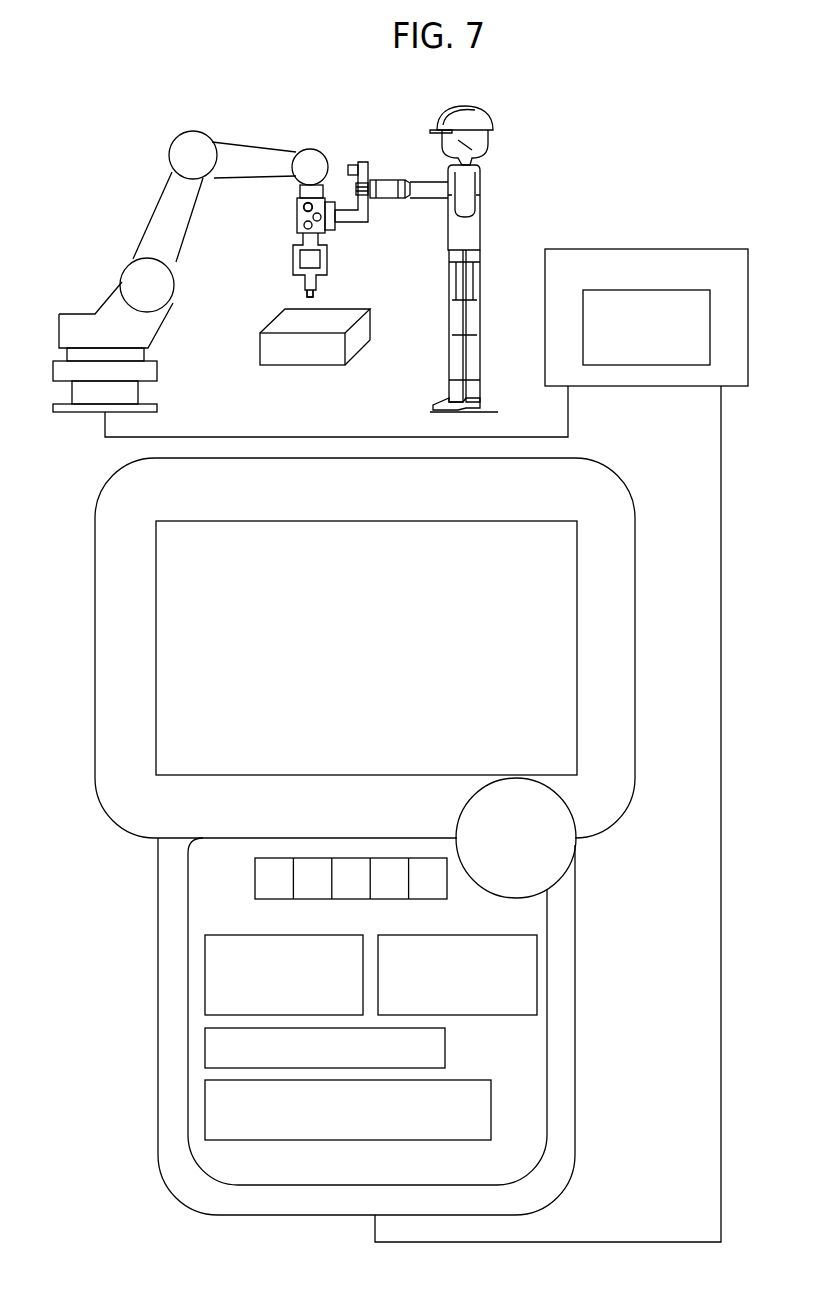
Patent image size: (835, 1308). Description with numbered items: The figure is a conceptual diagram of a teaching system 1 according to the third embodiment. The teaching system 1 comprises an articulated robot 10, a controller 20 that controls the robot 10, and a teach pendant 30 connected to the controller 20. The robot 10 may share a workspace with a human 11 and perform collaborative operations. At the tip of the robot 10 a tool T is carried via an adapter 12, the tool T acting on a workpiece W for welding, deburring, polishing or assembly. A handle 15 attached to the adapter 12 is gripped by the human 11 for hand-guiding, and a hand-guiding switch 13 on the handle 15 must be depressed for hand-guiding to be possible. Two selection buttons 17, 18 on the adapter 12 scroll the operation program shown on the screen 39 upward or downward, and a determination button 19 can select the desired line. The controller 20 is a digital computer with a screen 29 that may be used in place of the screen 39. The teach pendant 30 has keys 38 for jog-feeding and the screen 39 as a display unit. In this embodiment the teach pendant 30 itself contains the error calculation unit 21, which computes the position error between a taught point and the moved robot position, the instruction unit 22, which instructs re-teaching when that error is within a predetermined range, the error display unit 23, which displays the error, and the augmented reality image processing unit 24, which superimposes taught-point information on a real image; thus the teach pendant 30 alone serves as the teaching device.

The teaching system 1 is at (525, 167).
The robot 10 is at (145, 122).
The human 11 is at (472, 123).
The adapter 12 is at (297, 213).
The hand-guiding switch 13 is at (353, 163).
The handle 15 is at (368, 170).
The selection button 17 is at (297, 200).
The selection button 18 is at (297, 227).
The determination button 19 is at (326, 230).
The controller 20 is at (692, 249).
The screen 29 is at (688, 323).
The teach pendant 30 is at (615, 513).
The screen 39 is at (542, 587).
The keys 38 is at (242, 878).
The error calculation unit 21 is at (343, 935).
The instruction unit 22 is at (475, 935).
The error display unit 23 is at (450, 1045).
The augmented reality image processing unit 24 is at (491, 1105).
The tool T is at (316, 292).
The workpiece W is at (333, 355).